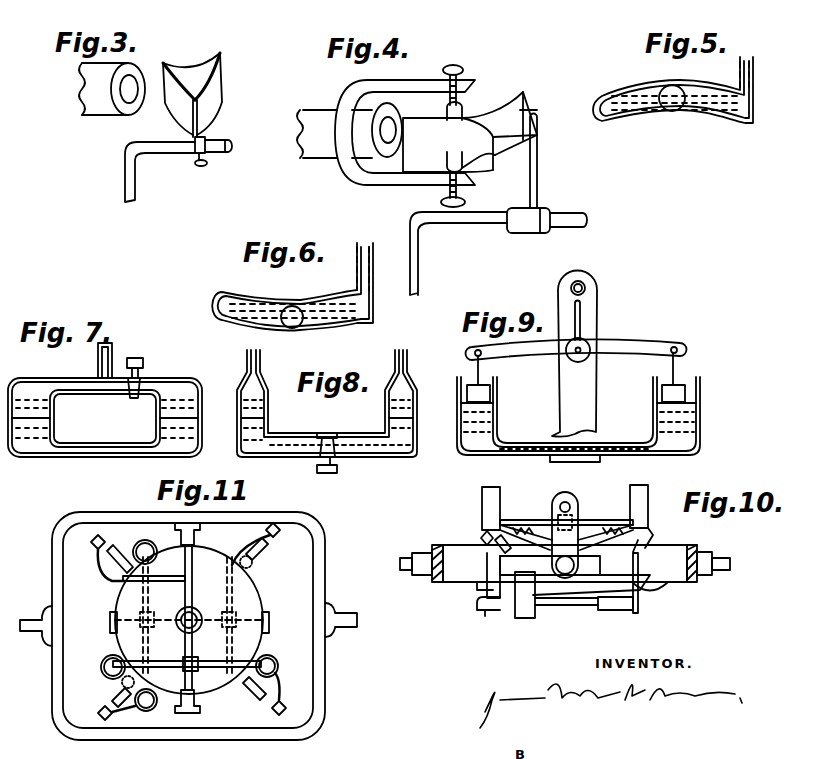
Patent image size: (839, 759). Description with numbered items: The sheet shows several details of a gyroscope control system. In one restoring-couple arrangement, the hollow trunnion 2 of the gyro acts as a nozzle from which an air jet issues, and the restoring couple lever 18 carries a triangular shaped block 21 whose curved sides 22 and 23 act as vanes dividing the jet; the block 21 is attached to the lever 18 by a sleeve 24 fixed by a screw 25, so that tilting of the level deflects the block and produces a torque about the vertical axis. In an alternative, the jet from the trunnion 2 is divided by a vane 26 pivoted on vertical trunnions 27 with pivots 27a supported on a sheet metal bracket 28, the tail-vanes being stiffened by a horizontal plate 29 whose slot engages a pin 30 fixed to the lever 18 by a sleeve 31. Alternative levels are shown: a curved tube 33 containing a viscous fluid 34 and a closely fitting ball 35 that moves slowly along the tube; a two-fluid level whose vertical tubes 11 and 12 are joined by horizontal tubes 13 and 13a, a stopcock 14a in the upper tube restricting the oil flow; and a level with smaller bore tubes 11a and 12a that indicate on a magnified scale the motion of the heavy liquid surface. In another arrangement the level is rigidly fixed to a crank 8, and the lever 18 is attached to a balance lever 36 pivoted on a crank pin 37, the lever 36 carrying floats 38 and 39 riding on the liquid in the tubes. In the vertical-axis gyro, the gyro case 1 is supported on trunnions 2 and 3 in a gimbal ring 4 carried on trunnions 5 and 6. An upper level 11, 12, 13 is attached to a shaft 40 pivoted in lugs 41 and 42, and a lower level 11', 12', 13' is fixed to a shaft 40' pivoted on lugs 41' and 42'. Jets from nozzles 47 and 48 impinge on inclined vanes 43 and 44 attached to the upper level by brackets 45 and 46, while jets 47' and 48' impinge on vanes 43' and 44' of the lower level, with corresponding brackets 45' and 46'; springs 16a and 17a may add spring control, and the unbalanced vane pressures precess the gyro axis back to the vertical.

In FIG. 11, the gyro case 1 is at (243, 600).
In FIG. 10, the gyro case 1 is at (588, 530).
In FIG. 3, the trunnion 2 is at (131, 76).
In FIG. 4, the trunnion 2 is at (392, 118).
In FIG. 11, the trunnion 2 is at (200, 710).
In FIG. 10, the trunnion 2 is at (565, 575).
In FIG. 11, the trunnion 3 is at (200, 540).
In FIG. 11, the gimbal ring 4 is at (326, 550).
In FIG. 10, the gimbal ring 4 is at (452, 546).
In FIG. 11, the trunnion 5 is at (347, 614).
In FIG. 10, the trunnion 5 is at (726, 560).
In FIG. 11, the trunnion 6 is at (30, 620).
In FIG. 10, the trunnion 6 is at (408, 558).
In FIG. 9, the crank 8 is at (582, 396).
In FIG. 7, the vertical tube 11 is at (30, 369).
In FIG. 8, the vertical tube 11 is at (314, 411).
In FIG. 9, the vertical tube 11 is at (515, 407).
In FIG. 11, the vertical tube 11 is at (279, 655).
In FIG. 10, the vertical tube 11 is at (654, 501).
In FIG. 7, the vertical tube 12 is at (121, 417).
In FIG. 8, the vertical tube 12 is at (328, 424).
In FIG. 9, the vertical tube 12 is at (639, 409).
In FIG. 11, the vertical tube 12 is at (101, 665).
In FIG. 10, the vertical tube 12 is at (490, 496).
In FIG. 7, the horizontal tube 13 is at (105, 431).
In FIG. 9, the horizontal tube 13 is at (578, 425).
In FIG. 11, the horizontal tube 13 is at (187, 655).
In FIG. 10, the horizontal tube 13 is at (566, 509).
In FIG. 7, the horizontal tube 13a is at (94, 379).
In FIG. 7, the stopcock 14a is at (144, 363).
In FIG. 8, the smaller bore tube 11a is at (247, 354).
In FIG. 8, the smaller bore tube 12a is at (408, 362).
In FIG. 11, the vertical tube 11' is at (159, 704).
In FIG. 10, the vertical tube 11' is at (550, 625).
In FIG. 11, the vertical tube 12' is at (154, 554).
In FIG. 11, the horizontal tube 13' is at (189, 617).
In FIG. 10, the spring 16a is at (513, 534).
In FIG. 10, the spring 17a is at (619, 534).
In FIG. 3, the restoring couple lever 18 is at (136, 174).
In FIG. 4, the restoring couple lever 18 is at (452, 226).
In FIG. 9, the restoring couple lever 18 is at (582, 323).
In FIG. 3, the triangular shaped block 21 is at (212, 97).
In FIG. 3, the curved side 22 is at (176, 104).
In FIG. 3, the curved side 23 is at (196, 70).
In FIG. 3, the sleeve 24 is at (212, 141).
In FIG. 3, the screw 25 is at (210, 164).
In FIG. 4, the vane 26 is at (464, 130).
In FIG. 4, the vertical trunnion 27 is at (462, 105).
In FIG. 4, the pivot 27a is at (460, 69).
In FIG. 4, the sheet metal bracket 28 is at (383, 83).
In FIG. 4, the horizontal plate 29 is at (526, 148).
In FIG. 4, the pin 30 is at (539, 183).
In FIG. 4, the sleeve 31 is at (530, 232).
In FIG. 5, the curved tube 33 is at (663, 114).
In FIG. 6, the curved tube 33 is at (322, 362).
In FIG. 5, the viscous fluid 34 is at (638, 92).
In FIG. 6, the viscous fluid 34 is at (258, 308).
In FIG. 5, the ball 35 is at (674, 92).
In FIG. 6, the ball 35 is at (294, 310).
In FIG. 9, the balance lever 36 is at (647, 350).
In FIG. 9, the crank pin 37 is at (583, 350).
In FIG. 9, the float 38 is at (490, 393).
In FIG. 9, the float 39 is at (662, 390).
In FIG. 11, the shaft 40 is at (182, 630).
In FIG. 10, the shaft 40 is at (573, 524).
In FIG. 11, the shaft 40' is at (218, 617).
In FIG. 10, the shaft 40' is at (568, 591).
In FIG. 11, the lug 41 is at (202, 617).
In FIG. 11, the lug 41' is at (282, 619).
In FIG. 10, the lug 41' is at (663, 586).
In FIG. 11, the lug 42 is at (219, 702).
In FIG. 10, the lug 42 is at (557, 485).
In FIG. 11, the lug 42' is at (95, 620).
In FIG. 10, the lug 42' is at (468, 620).
In FIG. 11, the vane 43 is at (291, 705).
In FIG. 10, the vane 43 is at (667, 534).
In FIG. 11, the vane 43' is at (91, 707).
In FIG. 10, the vane 43' is at (464, 603).
In FIG. 11, the vane 44 is at (93, 521).
In FIG. 10, the vane 44 is at (472, 531).
In FIG. 11, the vane 44' is at (299, 511).
In FIG. 10, the vane 44' is at (666, 593).
In FIG. 11, the bracket 45 is at (290, 685).
In FIG. 11, the bracket 45' is at (135, 732).
In FIG. 10, the bracket 45' is at (510, 606).
In FIG. 11, the bracket 46 is at (100, 569).
In FIG. 10, the bracket 46 is at (537, 501).
In FIG. 11, the hose 46' is at (253, 526).
In FIG. 10, the hose 46' is at (622, 616).
In FIG. 11, the nozzle 47 is at (252, 717).
In FIG. 10, the nozzle 47 is at (656, 555).
In FIG. 11, the jet 47' is at (108, 691).
In FIG. 11, the nozzle 48 is at (123, 533).
In FIG. 10, the nozzle 48 is at (485, 558).
In FIG. 11, the jet 48' is at (270, 553).